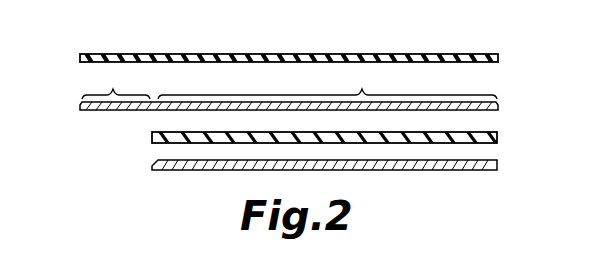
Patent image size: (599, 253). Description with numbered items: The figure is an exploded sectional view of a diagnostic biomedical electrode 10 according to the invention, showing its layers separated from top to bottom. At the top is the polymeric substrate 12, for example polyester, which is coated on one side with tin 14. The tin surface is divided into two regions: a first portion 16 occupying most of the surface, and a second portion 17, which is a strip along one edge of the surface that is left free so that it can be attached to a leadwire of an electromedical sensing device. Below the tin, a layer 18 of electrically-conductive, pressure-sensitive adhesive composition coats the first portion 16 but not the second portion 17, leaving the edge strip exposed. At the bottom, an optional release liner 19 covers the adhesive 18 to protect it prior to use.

The diagnostic biomedical electrode 10 is at (508, 38).
The polymeric substrate 12 is at (417, 54).
The tin 14 is at (80, 110).
The first portion of the tin surface 16 is at (327, 81).
The second portion of the tin surface 17 is at (116, 80).
The layer of electrically-conductive adhesive composition 18 is at (152, 138).
The release liner 19 is at (154, 170).